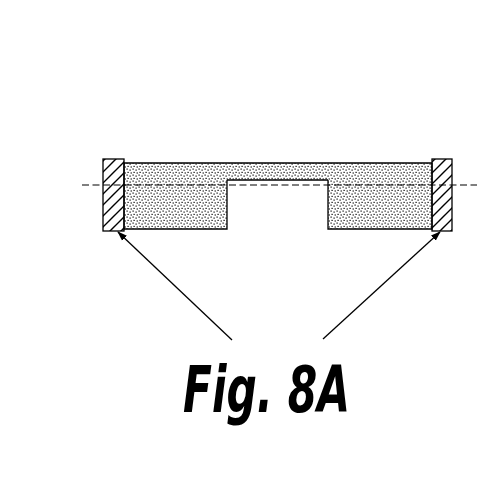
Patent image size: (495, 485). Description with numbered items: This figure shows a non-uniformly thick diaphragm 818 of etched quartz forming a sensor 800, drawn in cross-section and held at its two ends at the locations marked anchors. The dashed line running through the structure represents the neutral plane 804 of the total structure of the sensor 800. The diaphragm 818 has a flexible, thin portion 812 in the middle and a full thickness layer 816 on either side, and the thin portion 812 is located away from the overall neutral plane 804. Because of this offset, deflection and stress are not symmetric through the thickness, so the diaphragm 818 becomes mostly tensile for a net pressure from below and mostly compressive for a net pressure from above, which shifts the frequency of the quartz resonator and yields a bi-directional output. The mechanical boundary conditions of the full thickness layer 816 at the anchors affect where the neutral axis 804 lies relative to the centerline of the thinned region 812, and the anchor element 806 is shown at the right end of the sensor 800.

The sensor 800 is at (250, 107).
The neutral plane 804 is at (90, 183).
The right anchor 806 is at (443, 158).
The thin portion 812 is at (268, 168).
The full thickness layer 816 is at (180, 210).
The non-uniformly thick diaphragm 818 is at (395, 215).